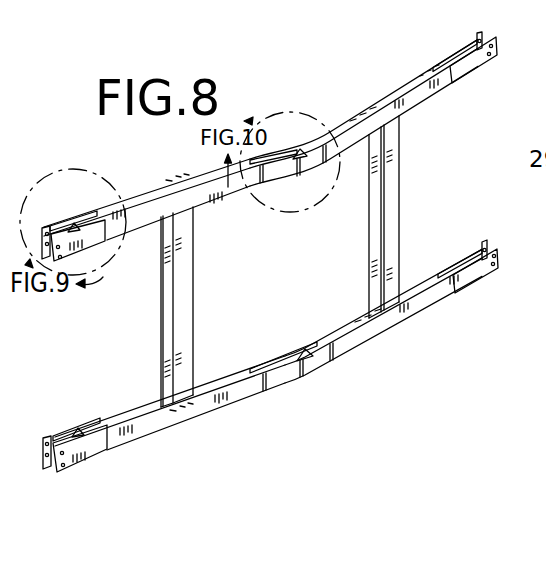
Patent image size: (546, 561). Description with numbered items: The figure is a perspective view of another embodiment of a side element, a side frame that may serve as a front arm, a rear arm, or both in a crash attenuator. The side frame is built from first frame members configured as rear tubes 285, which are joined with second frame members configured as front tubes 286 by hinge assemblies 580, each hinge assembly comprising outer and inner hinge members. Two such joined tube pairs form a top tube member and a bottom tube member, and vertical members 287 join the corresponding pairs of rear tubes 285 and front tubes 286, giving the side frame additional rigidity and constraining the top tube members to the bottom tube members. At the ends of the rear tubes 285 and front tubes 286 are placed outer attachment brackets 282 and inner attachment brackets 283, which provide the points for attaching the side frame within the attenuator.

The outer attachment bracket 282 is at (97, 240).
The inner attachment bracket 283 is at (57, 226).
The rear tube 285 is at (190, 186).
The front tube 286 is at (397, 99).
The vertical member 287 is at (386, 235).
The hinge assembly 580 is at (282, 259).